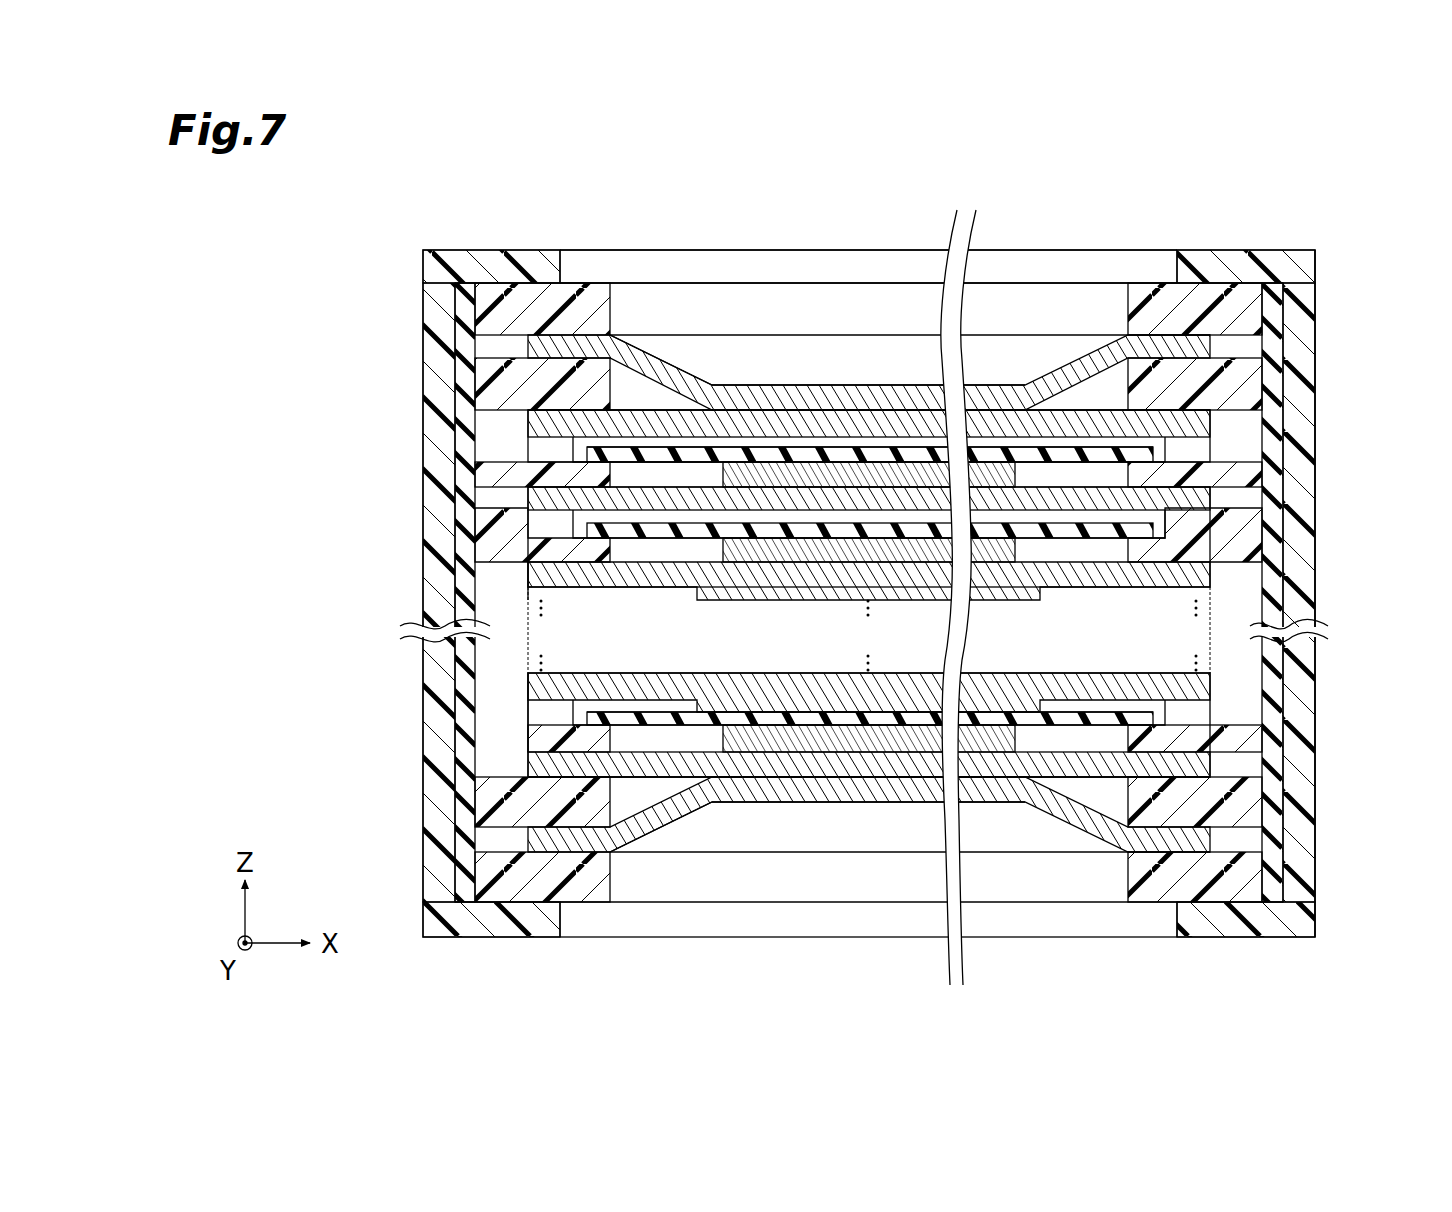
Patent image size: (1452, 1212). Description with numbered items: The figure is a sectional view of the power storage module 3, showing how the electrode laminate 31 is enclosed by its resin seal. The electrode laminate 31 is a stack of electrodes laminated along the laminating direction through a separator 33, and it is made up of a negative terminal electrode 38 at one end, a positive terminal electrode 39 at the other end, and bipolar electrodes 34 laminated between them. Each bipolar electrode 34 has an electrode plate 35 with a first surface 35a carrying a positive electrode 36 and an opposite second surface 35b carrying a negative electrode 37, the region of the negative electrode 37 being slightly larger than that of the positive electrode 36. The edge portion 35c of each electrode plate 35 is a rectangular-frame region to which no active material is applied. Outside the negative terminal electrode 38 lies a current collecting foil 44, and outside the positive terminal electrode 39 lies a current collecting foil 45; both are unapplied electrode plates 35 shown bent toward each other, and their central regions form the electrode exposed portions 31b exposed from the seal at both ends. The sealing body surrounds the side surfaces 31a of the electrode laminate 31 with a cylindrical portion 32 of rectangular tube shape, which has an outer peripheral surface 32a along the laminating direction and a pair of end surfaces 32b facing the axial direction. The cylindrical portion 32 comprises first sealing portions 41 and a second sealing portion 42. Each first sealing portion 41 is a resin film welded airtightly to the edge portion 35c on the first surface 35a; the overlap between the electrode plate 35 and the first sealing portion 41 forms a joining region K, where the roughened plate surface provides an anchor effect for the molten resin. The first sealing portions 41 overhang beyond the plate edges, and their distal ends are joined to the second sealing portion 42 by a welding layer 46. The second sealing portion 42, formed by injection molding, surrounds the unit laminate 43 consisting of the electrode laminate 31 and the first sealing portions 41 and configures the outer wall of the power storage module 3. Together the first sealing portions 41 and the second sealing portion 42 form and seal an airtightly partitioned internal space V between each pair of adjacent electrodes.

The power storage module 3 is at (470, 222).
The electrode laminate 31 is at (1008, 272).
The side surface 31a is at (528, 605).
The electrode exposed portion 31b is at (710, 393).
The cylindrical portion 32 is at (425, 250).
The outer peripheral surface 32a is at (1318, 270).
The end surface 32b is at (1296, 250).
The separator 33 is at (1185, 480).
The bipolar electrode 34 is at (352, 475).
The electrode plate 35 is at (560, 422).
The first surface 35a is at (912, 400).
The second surface 35b is at (833, 425).
The edge portion 35c is at (1150, 455).
The positive electrode 36 is at (545, 575).
The negative electrode 37 is at (590, 455).
The negative terminal electrode 38 is at (352, 385).
The positive terminal electrode 39 is at (352, 740).
The first sealing portion 41 is at (487, 375).
The second sealing portion 42 is at (470, 660).
The unit laminate 43 is at (478, 912).
The current collecting foil 44 is at (748, 400).
The current collecting foil 45 is at (770, 790).
The welding layer 46 is at (495, 315).
The joining region K is at (700, 446).
The internal space V is at (1230, 600).